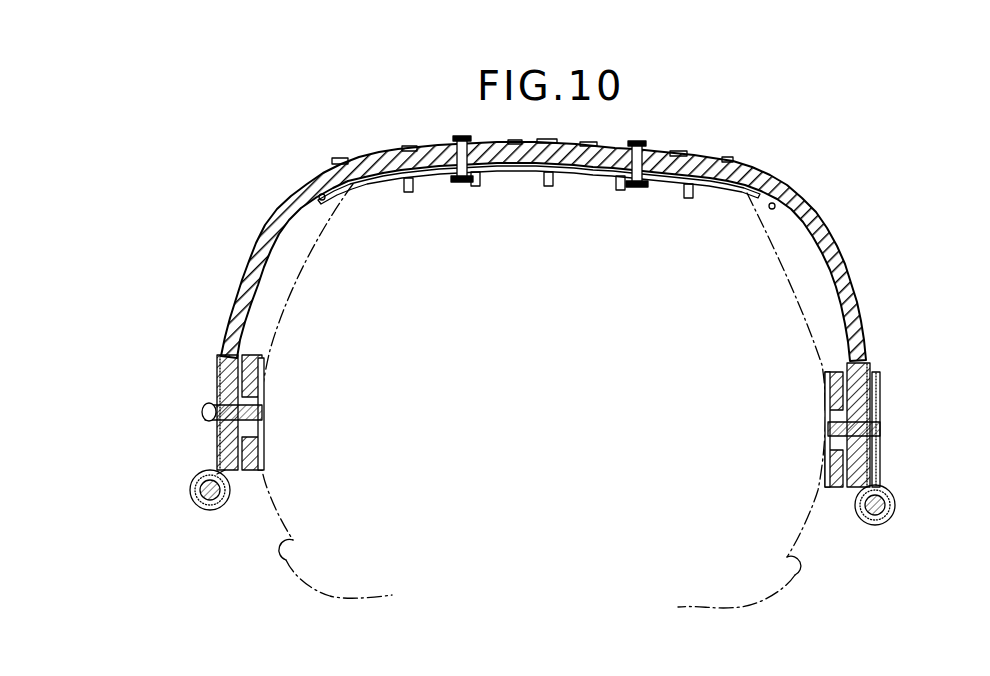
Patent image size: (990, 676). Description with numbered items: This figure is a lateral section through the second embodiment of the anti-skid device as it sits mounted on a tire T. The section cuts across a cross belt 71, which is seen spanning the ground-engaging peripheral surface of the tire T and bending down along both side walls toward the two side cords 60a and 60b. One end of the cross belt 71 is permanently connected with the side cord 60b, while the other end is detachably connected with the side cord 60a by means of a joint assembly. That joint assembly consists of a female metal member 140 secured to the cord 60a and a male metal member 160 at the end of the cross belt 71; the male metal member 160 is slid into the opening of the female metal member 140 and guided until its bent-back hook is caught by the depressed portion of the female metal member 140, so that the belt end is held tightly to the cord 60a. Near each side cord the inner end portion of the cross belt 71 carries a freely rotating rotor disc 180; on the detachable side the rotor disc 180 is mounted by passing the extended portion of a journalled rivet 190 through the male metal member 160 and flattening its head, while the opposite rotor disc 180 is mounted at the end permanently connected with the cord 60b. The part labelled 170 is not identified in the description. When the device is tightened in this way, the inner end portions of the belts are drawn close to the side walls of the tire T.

The cross belt 71 is at (808, 214).
The tire T is at (793, 280).
The rotor disc 180 is at (264, 372).
The bolt 170 is at (203, 414).
The side cord 60b is at (208, 503).
The male metal member 160 is at (882, 470).
The female metal member 140 is at (886, 381).
The journalled rivet 190 is at (880, 430).
The side cord 60a is at (888, 520).